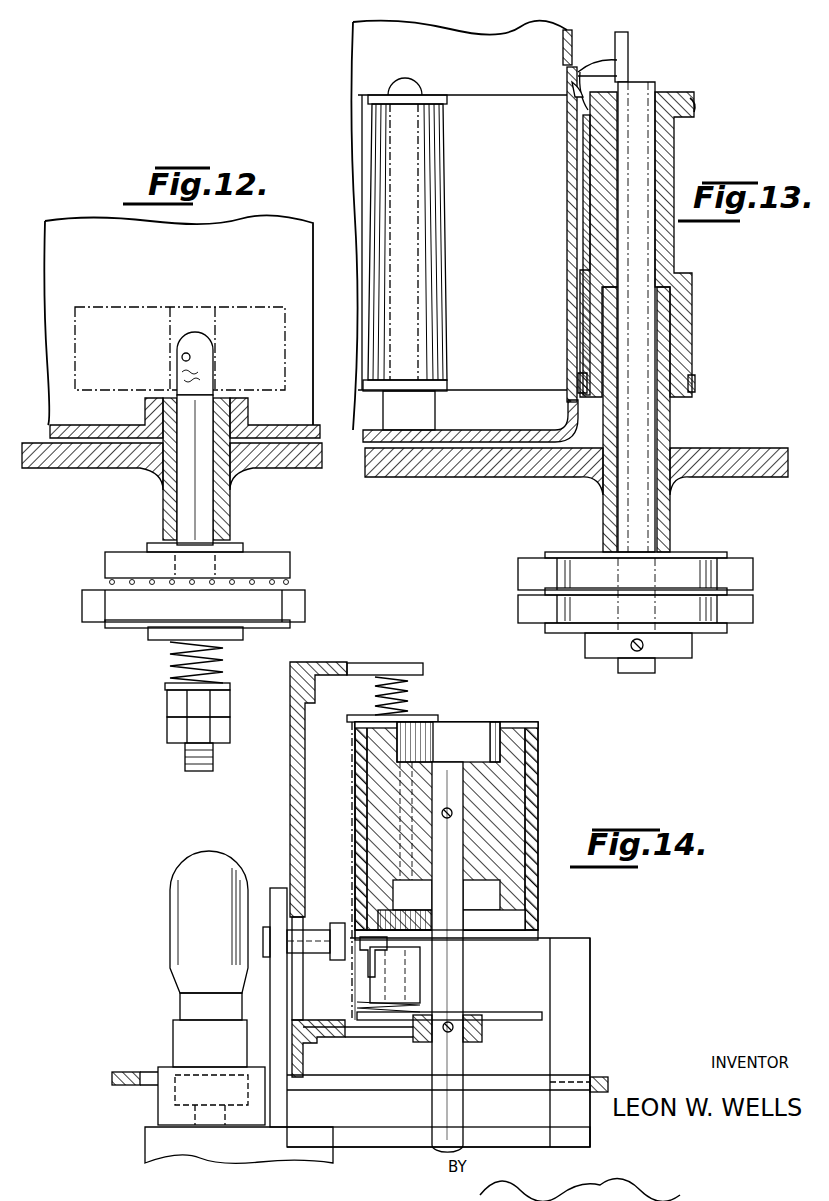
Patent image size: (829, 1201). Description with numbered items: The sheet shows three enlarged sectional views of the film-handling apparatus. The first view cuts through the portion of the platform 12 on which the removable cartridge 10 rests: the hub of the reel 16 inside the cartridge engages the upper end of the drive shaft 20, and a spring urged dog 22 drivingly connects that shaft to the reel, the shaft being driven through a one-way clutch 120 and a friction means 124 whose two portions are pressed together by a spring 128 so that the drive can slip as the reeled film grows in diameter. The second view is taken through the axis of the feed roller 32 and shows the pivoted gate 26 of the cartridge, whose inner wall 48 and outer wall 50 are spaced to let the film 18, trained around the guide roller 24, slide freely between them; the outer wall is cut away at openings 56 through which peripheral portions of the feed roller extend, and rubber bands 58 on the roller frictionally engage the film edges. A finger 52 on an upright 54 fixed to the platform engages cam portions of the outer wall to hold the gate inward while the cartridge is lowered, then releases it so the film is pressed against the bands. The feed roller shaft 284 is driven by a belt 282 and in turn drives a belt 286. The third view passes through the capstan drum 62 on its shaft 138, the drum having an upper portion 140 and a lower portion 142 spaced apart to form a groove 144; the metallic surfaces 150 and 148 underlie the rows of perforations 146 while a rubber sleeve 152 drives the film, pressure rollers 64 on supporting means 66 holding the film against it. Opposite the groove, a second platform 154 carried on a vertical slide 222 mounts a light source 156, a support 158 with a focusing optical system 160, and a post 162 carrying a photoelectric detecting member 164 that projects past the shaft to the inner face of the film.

In FIG. 12, the cartridge 10 is at (86, 432).
In FIG. 13, the cartridge 10 is at (480, 432).
In FIG. 12, the platform 12 is at (53, 468).
In FIG. 13, the platform 12 is at (430, 478).
In FIG. 14, the platform 12 is at (133, 1072).
In FIG. 12, the reel 16 is at (220, 318).
In FIG. 13, the film 18 is at (362, 205).
In FIG. 14, the film 18 is at (348, 792).
In FIG. 12, the drive shaft 20 is at (185, 493).
In FIG. 12, the spring urged dog 22 is at (172, 388).
In FIG. 13, the guide roller 24 is at (430, 216).
In FIG. 13, the pivoted gate 26 is at (560, 238).
In FIG. 13, the feed roller 32 is at (668, 160).
In FIG. 13, the inner wall 48 is at (572, 160).
In FIG. 13, the outer wall 50 is at (587, 145).
In FIG. 13, the finger 52 is at (598, 72).
In FIG. 13, the upright 54 is at (622, 50).
In FIG. 13, the openings 56 is at (572, 88).
In FIG. 13, the bands 58 is at (695, 100).
In FIG. 14, the capstan drum 62 is at (476, 805).
In FIG. 14, the pressure rollers 64 is at (430, 742).
In FIG. 14, the supporting means 66 is at (358, 666).
In FIG. 12, the one-way clutch 120 is at (150, 544).
In FIG. 12, the friction means 124 is at (290, 582).
In FIG. 12, the spring 128 is at (175, 655).
In FIG. 14, the shaft 138 is at (458, 976).
In FIG. 14, the upper portion 140 is at (510, 842).
In FIG. 14, the lower portion 142 is at (495, 1022).
In FIG. 14, the groove 144 is at (540, 955).
In FIG. 14, the perforations 146 is at (350, 725).
In FIG. 14, the metallic peripheral surface 148 is at (545, 1010).
In FIG. 14, the upper peripheral surface 150 is at (540, 730).
In FIG. 14, the rubber sleeve 152 is at (540, 778).
In FIG. 14, the second platform 154 is at (390, 1135).
In FIG. 14, the light source 156 is at (182, 900).
In FIG. 14, the support 158 is at (275, 1040).
In FIG. 14, the focusing optical system 160 is at (320, 925).
In FIG. 14, the post 162 is at (578, 960).
In FIG. 14, the photoelectric detecting member 164 is at (365, 975).
In FIG. 14, the vertical slide 222 is at (168, 1150).
In FIG. 13, the belt 282 is at (742, 575).
In FIG. 13, the feed roller shaft 284 is at (650, 248).
In FIG. 13, the belt 286 is at (533, 610).